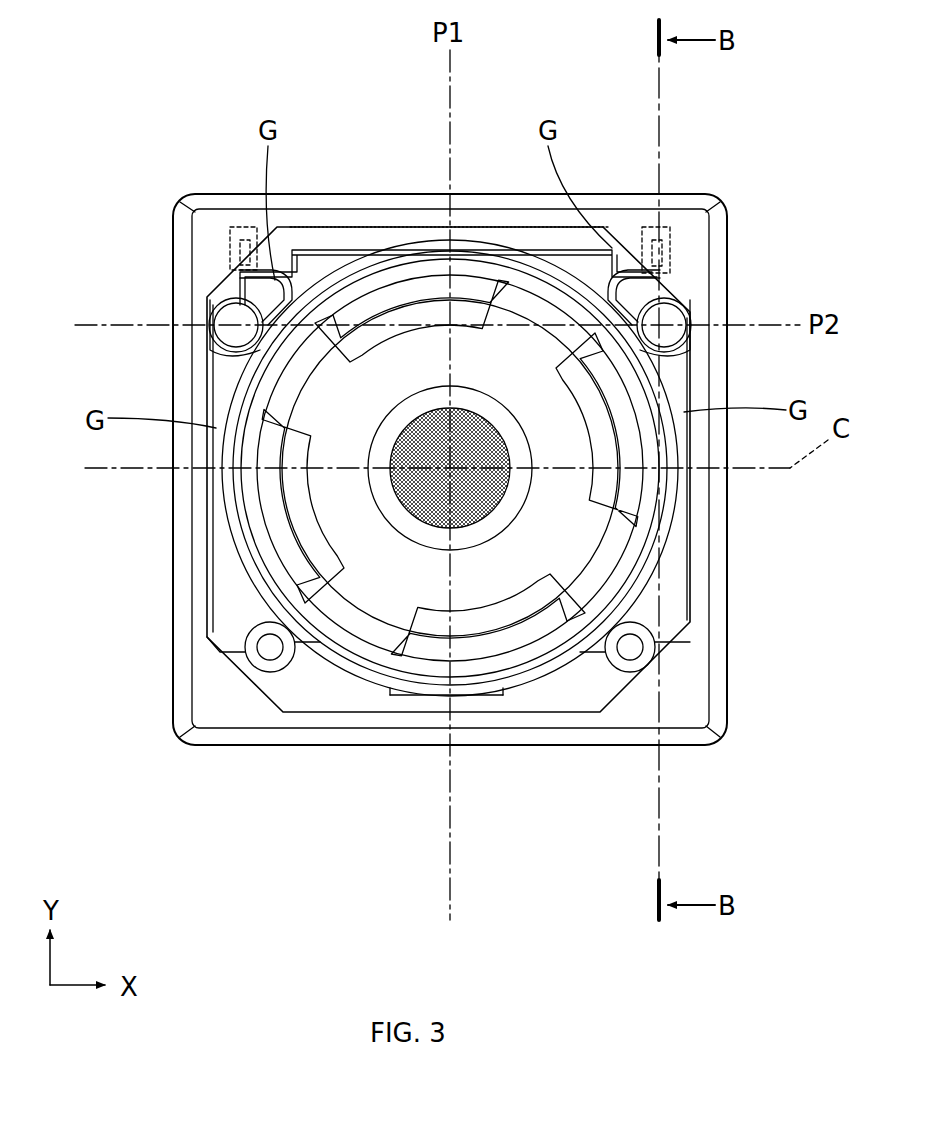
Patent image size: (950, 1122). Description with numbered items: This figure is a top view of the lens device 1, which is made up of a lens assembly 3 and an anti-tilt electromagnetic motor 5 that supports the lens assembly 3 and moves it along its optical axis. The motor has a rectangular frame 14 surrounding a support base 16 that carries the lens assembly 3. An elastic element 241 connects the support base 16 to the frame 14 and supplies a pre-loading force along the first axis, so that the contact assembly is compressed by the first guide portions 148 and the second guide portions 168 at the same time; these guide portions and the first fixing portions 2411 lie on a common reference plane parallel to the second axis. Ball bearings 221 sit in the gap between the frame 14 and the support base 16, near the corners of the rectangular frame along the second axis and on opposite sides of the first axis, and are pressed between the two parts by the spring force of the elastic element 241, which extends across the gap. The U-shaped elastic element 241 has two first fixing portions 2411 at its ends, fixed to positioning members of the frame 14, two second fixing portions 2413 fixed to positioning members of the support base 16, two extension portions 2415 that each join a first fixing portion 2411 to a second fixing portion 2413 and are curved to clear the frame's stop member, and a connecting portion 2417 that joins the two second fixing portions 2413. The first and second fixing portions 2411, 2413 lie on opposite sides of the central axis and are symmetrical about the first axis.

The lens device 1 is at (135, 78).
The anti-tilt electromagnetic motor 5 is at (722, 182).
The frame 14 is at (362, 218).
The support base 16 is at (316, 250).
The first fixing portion 2411 is at (238, 225).
The second guide portion 168 is at (243, 271).
The first guide portion 148 is at (222, 306).
The ball bearing 221 is at (222, 345).
The elastic element 241 is at (245, 545).
The extension portion 2415 is at (676, 490).
The lens assembly 3 is at (606, 555).
The second fixing portion 2413 is at (660, 640).
The connecting portion 2417 is at (497, 693).